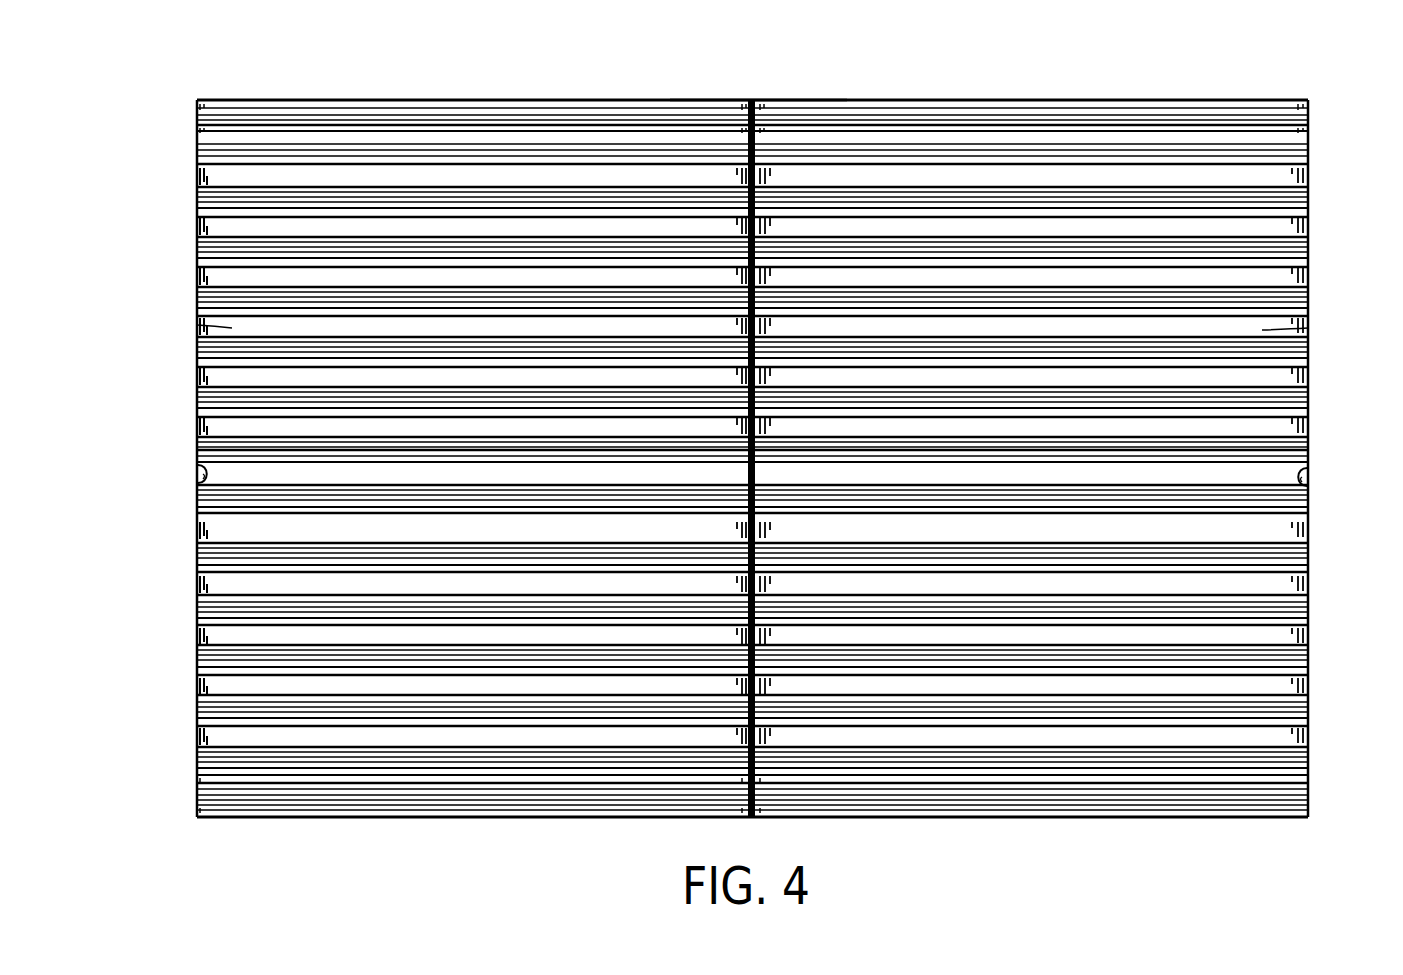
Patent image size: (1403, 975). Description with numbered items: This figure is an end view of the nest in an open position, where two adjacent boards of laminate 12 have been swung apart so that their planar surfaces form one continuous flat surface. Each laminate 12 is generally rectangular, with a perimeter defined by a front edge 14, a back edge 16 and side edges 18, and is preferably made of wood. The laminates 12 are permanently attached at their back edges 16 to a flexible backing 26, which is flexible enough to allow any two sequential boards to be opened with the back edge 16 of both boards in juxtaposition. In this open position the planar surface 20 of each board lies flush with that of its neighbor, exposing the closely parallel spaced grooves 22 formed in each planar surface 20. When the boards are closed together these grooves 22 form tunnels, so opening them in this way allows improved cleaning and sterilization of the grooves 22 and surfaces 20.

The laminate 12 is at (847, 100).
The front edge 14 is at (197, 427).
The back edge 16 is at (750, 817).
The side edge 18 is at (548, 100).
The planar surface 20 is at (197, 325).
The groove 22 is at (196, 455).
The flexible backing 26 is at (751, 100).